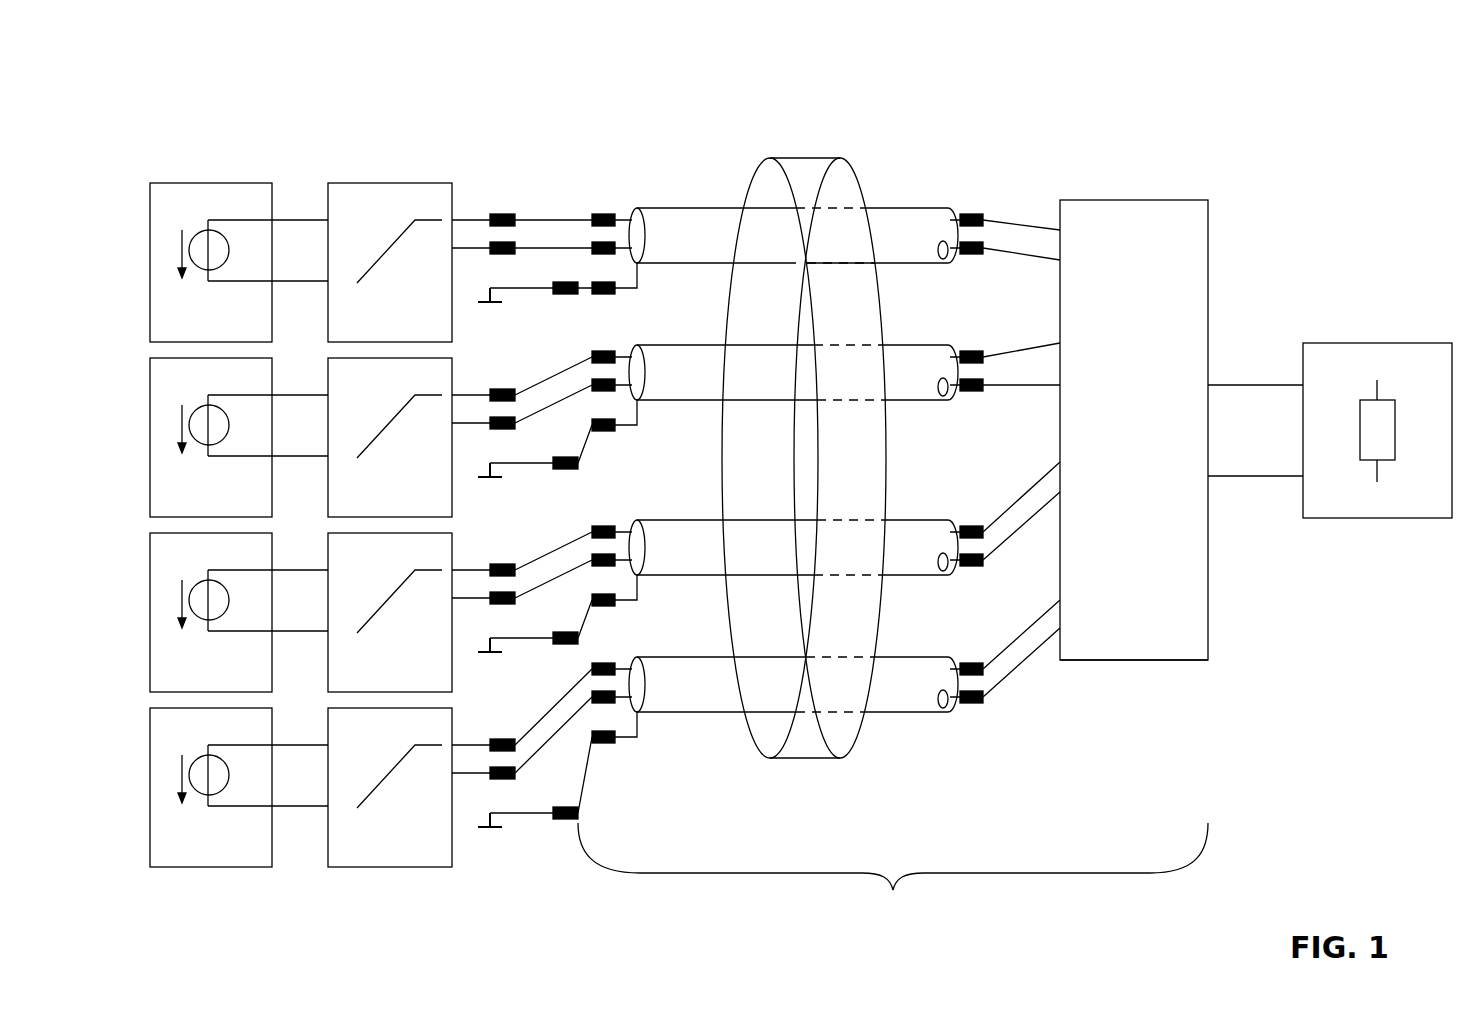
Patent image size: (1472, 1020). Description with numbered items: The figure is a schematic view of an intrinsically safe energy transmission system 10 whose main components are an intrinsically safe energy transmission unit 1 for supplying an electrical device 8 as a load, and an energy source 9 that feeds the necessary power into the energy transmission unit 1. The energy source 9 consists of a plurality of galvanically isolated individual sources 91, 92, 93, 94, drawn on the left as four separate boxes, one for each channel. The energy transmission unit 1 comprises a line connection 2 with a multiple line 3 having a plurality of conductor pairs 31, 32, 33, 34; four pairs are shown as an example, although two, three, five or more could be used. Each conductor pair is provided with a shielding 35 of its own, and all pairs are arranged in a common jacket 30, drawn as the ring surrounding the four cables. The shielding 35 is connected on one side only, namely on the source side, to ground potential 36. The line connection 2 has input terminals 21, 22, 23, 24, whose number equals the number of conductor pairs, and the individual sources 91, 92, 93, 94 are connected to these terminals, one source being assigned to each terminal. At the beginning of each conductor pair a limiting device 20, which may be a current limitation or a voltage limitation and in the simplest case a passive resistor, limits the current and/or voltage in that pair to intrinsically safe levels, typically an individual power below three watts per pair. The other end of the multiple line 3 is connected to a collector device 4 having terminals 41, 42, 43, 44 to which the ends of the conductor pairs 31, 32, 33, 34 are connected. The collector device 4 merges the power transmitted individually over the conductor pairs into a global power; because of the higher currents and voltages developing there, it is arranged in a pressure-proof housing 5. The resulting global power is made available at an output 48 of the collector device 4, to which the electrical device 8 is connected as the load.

The energy transmission unit 1 is at (1128, 157).
The line connection 2 is at (893, 892).
The multiple line 3 is at (898, 748).
The collector device 4 is at (1124, 450).
The pressure-proof housing 5 is at (1133, 661).
The electrical device 8 is at (1352, 518).
The energy source 9 is at (200, 175).
The energy transmission system 10 is at (975, 148).
The limiting device 20 is at (350, 193).
The input terminal 21 is at (604, 236).
The input terminal 22 is at (622, 376).
The input terminal 23 is at (624, 551).
The input terminal 24 is at (624, 686).
The common jacket 30 is at (808, 158).
The conductor pair 31 is at (706, 214).
The conductor pair 32 is at (706, 356).
The conductor pair 33 is at (706, 530).
The conductor pair 34 is at (706, 667).
The shielding 35 is at (593, 294).
The ground potential 36 is at (492, 305).
The terminal 41 is at (1013, 236).
The terminal 42 is at (1013, 366).
The terminal 43 is at (1017, 510).
The terminal 44 is at (1017, 648).
The output 48 is at (1208, 450).
The individual source 91 is at (152, 252).
The individual source 92 is at (152, 427).
The individual source 93 is at (152, 602).
The individual source 94 is at (152, 777).